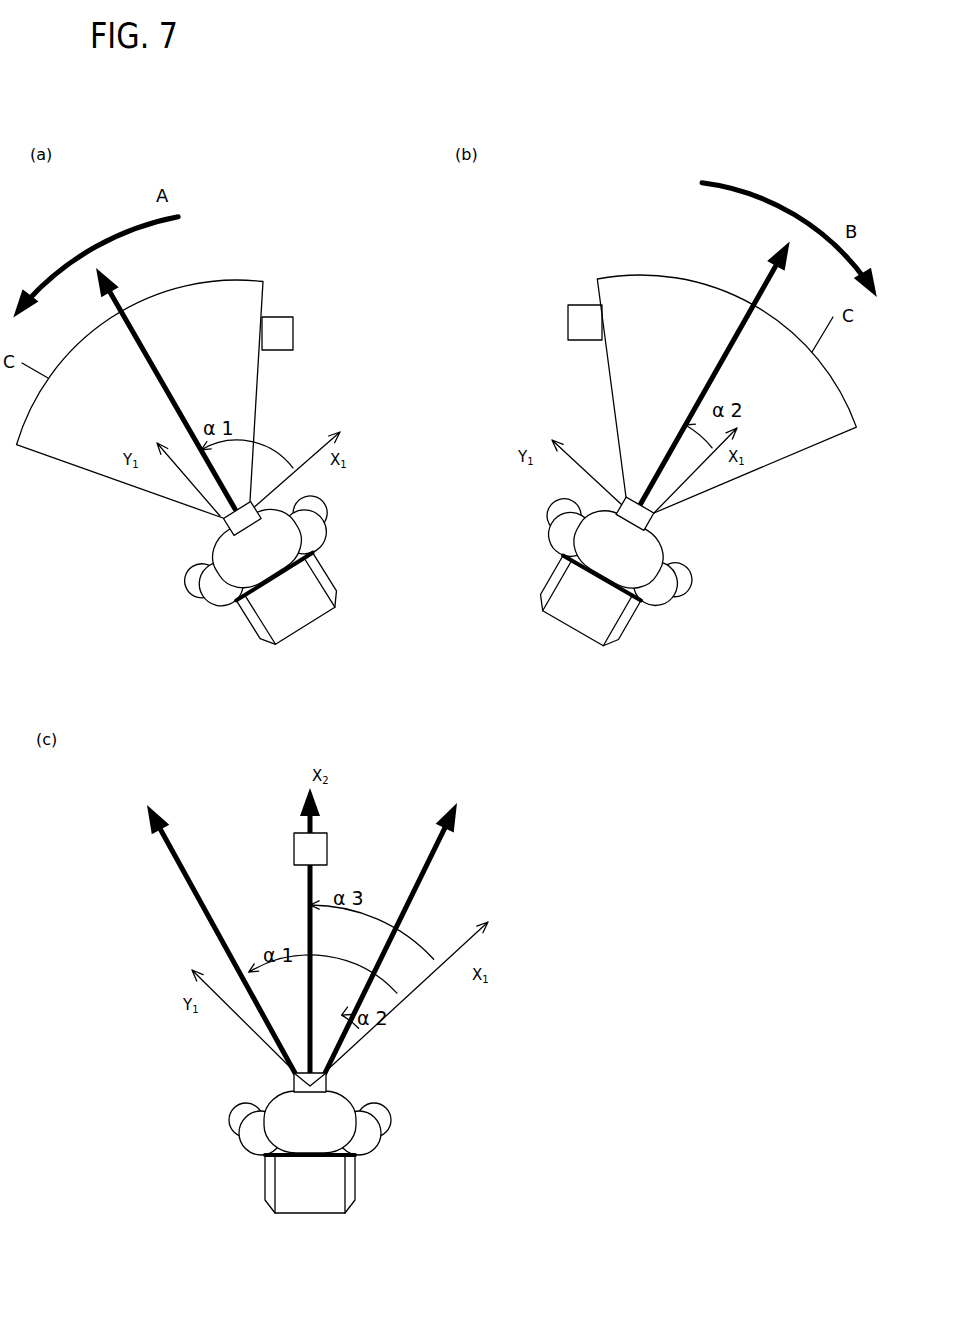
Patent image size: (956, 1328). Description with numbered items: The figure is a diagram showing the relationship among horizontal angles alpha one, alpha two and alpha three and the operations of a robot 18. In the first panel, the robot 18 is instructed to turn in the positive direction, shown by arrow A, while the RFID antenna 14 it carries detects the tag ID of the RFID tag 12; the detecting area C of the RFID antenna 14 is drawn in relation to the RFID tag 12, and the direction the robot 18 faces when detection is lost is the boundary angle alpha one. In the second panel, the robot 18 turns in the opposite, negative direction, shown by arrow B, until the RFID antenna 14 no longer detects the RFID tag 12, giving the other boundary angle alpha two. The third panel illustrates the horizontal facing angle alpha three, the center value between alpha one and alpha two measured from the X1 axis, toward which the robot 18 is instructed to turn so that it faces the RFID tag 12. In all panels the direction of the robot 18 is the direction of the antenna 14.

The RFID tag 12 is at (275, 315).
The RFID antenna 14 is at (220, 530).
The robot 18 is at (325, 542).